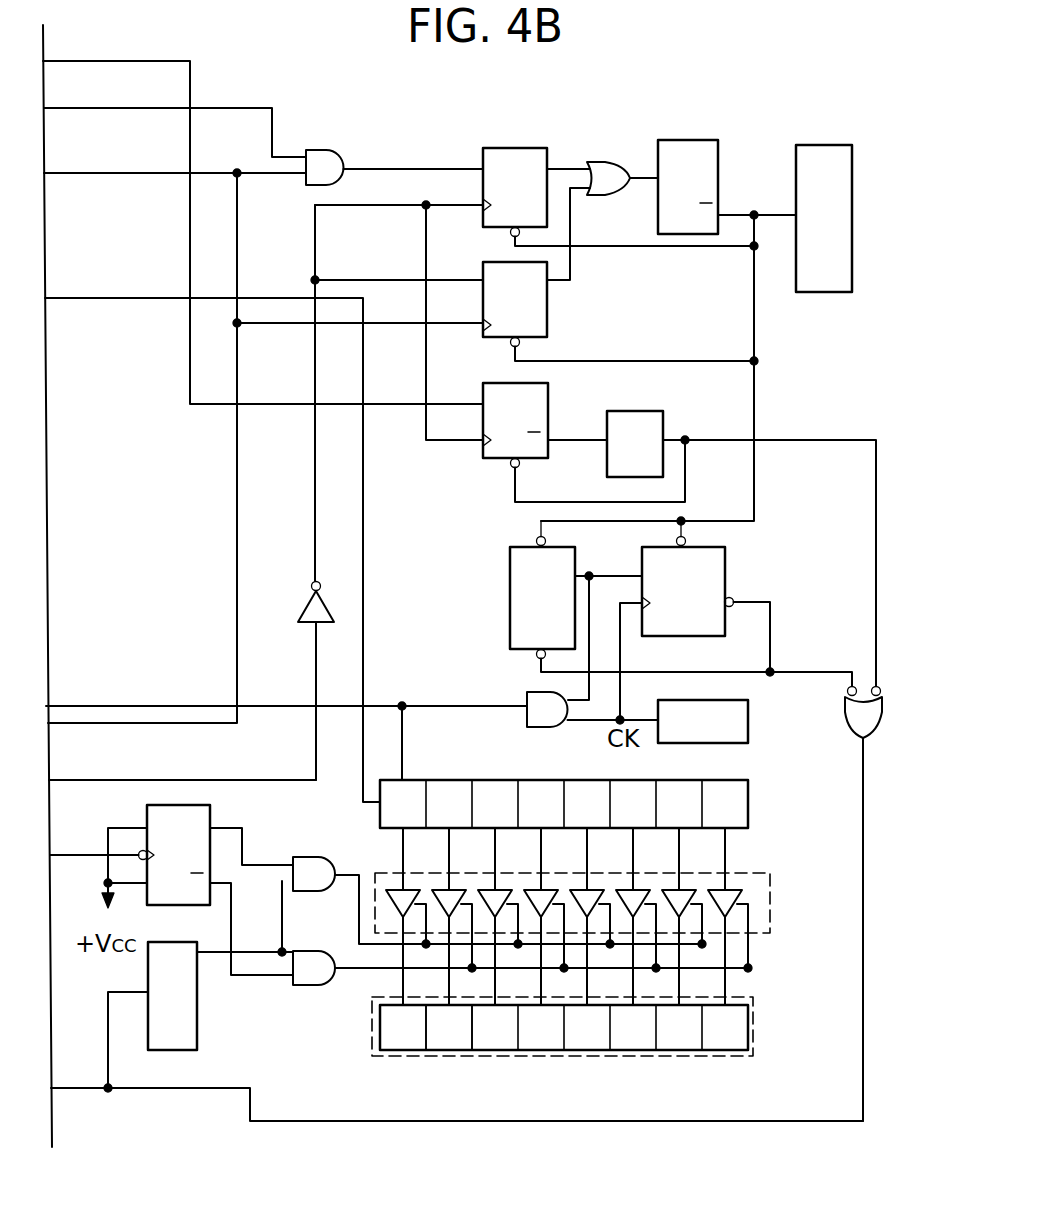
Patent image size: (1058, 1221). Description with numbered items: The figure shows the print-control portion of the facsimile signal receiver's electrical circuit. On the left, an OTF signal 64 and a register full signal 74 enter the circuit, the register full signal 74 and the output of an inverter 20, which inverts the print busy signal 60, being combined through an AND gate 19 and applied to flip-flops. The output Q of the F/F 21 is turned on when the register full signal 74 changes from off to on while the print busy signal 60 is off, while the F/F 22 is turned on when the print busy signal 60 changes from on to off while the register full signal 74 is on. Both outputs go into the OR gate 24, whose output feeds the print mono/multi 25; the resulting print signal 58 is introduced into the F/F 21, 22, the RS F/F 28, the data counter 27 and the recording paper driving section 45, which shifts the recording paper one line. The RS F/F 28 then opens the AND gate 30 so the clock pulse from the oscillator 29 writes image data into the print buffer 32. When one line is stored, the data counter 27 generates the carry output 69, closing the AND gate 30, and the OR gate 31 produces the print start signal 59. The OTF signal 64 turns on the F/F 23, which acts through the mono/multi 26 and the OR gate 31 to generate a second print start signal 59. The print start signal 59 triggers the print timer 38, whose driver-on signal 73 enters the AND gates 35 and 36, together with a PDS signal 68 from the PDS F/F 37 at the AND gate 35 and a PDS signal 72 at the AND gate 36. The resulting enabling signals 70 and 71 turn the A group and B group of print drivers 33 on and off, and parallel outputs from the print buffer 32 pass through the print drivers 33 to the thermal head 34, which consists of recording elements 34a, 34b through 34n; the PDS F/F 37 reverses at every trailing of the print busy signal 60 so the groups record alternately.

The AND gate 19 is at (343, 160).
The inverter 20 is at (302, 610).
The flip-flop 21 is at (548, 313).
The flip-flop 22 is at (512, 148).
The flip-flop 23 is at (548, 403).
The OR gate 24 is at (608, 162).
The print mono/multi 25 is at (683, 140).
The mono/multi 26 is at (663, 423).
The data counter 27 is at (726, 574).
The RS F/F (register selector flip-flop) 28 is at (510, 582).
The OSC (oscillator) 29 is at (720, 743).
The AND gate 30 is at (528, 720).
The OR gate 31 is at (848, 728).
The print buffer 32 is at (750, 806).
The print driver 33 is at (770, 888).
The thermal head (recording member) 34 is at (593, 1055).
The recording element 34a is at (395, 1040).
The recording element 34b is at (445, 1040).
The recording element 34n is at (722, 1042).
The AND gate 35 is at (325, 857).
The AND gate 36 is at (323, 951).
The PDS F/F (print driver selector flip-flop) 37 is at (210, 812).
The print timer 38 is at (197, 1033).
The recording paper driving section 45 is at (820, 145).
The print signal 58 is at (755, 400).
The print start signal 59 is at (170, 1088).
The print busy signal 60 is at (275, 780).
The OTF signal (overtime flag) 64 is at (105, 61).
The PDS signal (print driver selector) 68 is at (243, 843).
The DCC signal (data counter carrier) 69 is at (771, 632).
The group A enable signal 70 is at (358, 900).
The group B enable signal 71 is at (352, 968).
The PDS signal (print driver selector) 72 is at (274, 976).
The driver-on signal 73 is at (257, 952).
The register full signal 74 is at (84, 173).